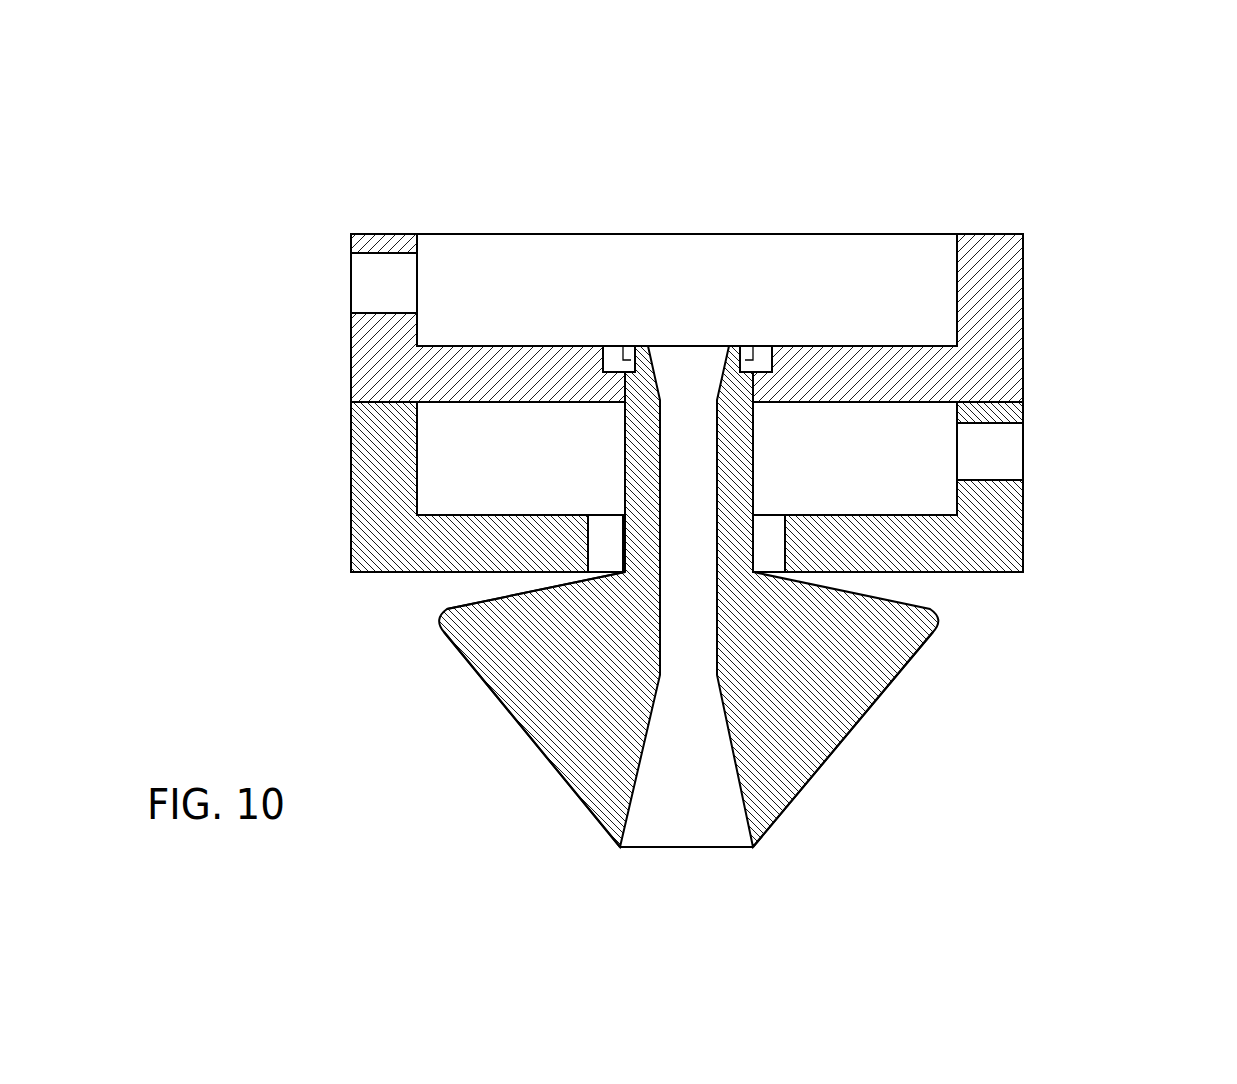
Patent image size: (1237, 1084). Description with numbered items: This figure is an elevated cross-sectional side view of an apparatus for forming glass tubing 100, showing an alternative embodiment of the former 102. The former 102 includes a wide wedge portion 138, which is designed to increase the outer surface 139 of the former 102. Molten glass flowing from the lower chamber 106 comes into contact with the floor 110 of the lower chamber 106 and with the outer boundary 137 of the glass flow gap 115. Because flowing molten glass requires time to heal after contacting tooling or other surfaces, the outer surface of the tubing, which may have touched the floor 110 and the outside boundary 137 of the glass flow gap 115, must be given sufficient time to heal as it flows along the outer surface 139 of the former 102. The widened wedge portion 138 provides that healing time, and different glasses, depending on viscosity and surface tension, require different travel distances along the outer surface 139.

The apparatus for forming glass tubing 100 is at (793, 374).
The former 102 is at (753, 621).
The lower chamber 106 is at (927, 493).
The floor 110 is at (473, 513).
The glass flow gap 115 is at (607, 540).
The outer boundary 137 is at (590, 524).
The wide wedge portion 138 is at (815, 730).
The outer surface 139 is at (793, 805).